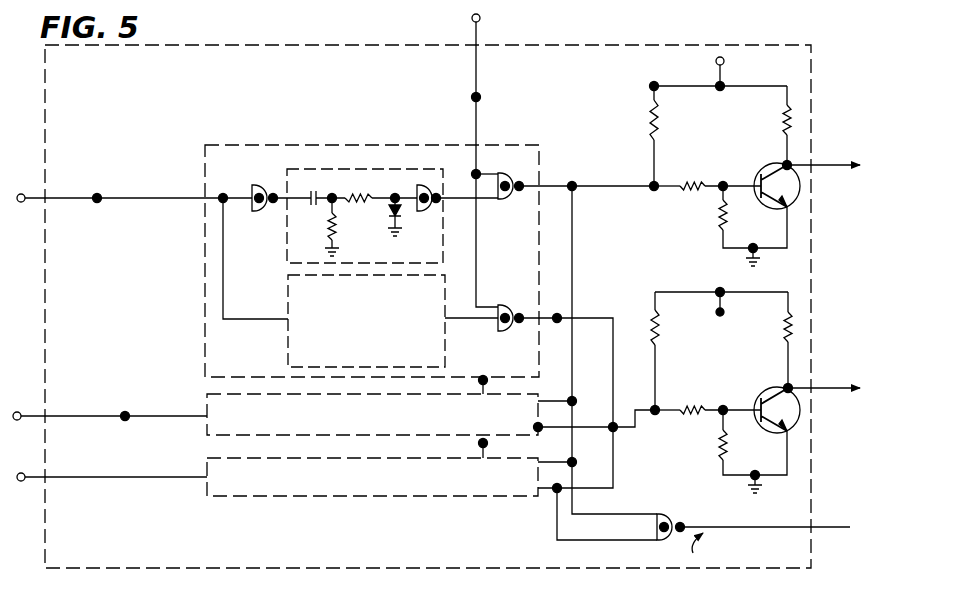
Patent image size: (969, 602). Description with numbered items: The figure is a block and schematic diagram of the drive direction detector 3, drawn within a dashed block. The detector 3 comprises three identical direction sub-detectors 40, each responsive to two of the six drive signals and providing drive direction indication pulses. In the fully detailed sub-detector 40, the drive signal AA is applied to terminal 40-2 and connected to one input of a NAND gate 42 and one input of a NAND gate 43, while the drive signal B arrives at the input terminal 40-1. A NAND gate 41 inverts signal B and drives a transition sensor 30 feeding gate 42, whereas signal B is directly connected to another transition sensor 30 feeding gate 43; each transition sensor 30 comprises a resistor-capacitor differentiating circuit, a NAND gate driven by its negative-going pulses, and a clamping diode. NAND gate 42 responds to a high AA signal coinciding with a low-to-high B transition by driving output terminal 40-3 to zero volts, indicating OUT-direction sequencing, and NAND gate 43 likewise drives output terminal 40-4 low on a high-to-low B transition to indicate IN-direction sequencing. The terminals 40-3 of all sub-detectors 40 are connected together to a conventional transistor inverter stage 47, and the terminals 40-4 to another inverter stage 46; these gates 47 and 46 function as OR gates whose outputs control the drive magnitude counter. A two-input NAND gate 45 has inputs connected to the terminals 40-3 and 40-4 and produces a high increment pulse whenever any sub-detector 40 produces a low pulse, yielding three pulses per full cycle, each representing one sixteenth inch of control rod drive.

The drive direction detector 3 is at (537, 57).
The transition sensor 30 is at (298, 258).
The direction sub-detector 40 is at (260, 146).
The input terminal 40-1 is at (101, 202).
The terminal 40-2 is at (481, 97).
The output terminal 40-3 is at (558, 185).
The output terminal 40-4 is at (557, 322).
The NAND gate 41 is at (277, 172).
The NAND gate 42 is at (509, 199).
The NAND gate 43 is at (520, 291).
The two-input NAND gate 45 is at (676, 513).
The gate functioning as OR gate 46 is at (700, 436).
The gate functioning as OR gate 47 is at (692, 208).